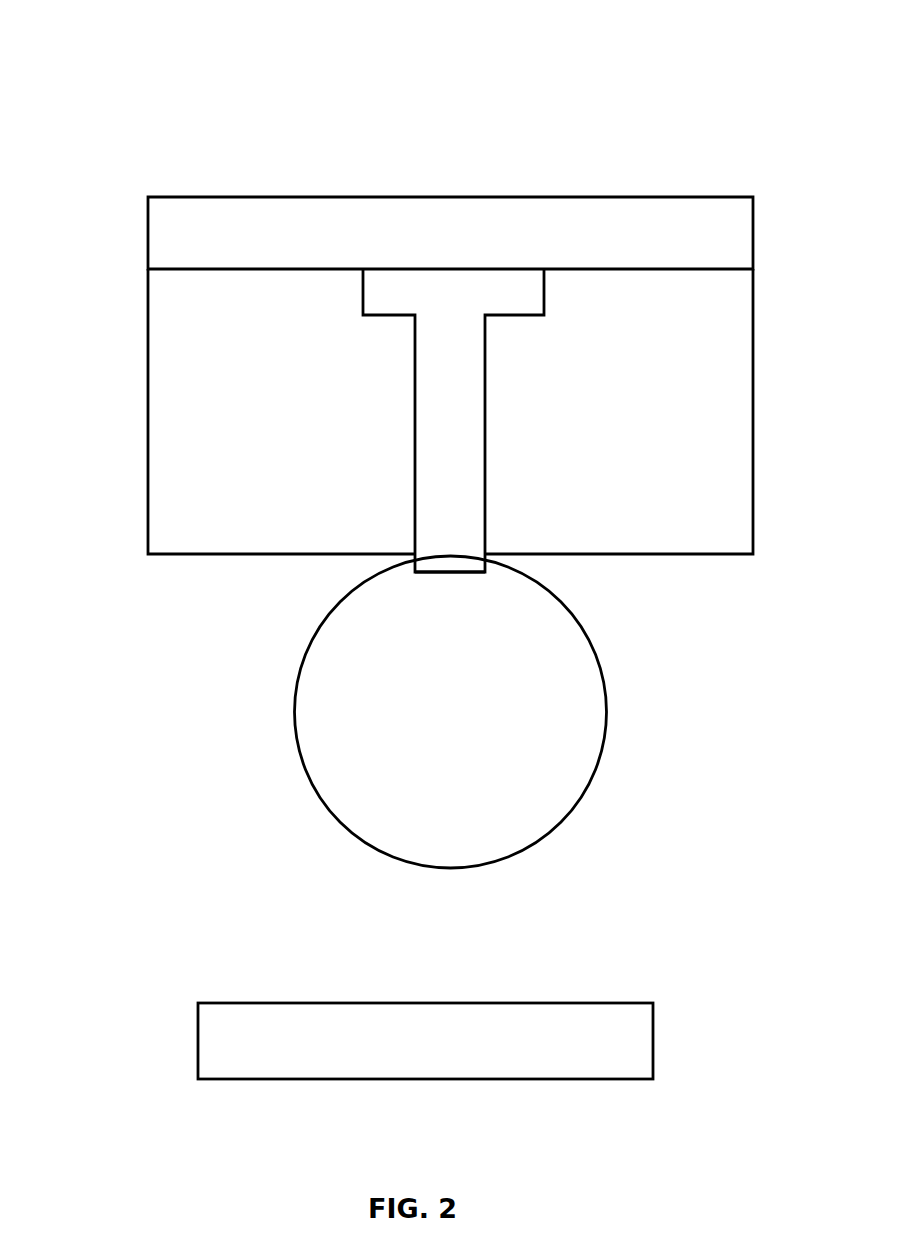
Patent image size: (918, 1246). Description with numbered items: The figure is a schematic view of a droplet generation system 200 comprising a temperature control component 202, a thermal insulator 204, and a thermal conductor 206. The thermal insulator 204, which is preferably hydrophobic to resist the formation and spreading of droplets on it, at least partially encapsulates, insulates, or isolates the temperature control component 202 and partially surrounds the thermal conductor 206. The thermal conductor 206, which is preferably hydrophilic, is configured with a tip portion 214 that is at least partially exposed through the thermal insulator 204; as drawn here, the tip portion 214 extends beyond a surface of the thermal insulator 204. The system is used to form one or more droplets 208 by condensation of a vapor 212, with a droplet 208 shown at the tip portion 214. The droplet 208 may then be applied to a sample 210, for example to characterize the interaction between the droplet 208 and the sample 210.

The droplet generation system 200 is at (450, 115).
The temperature control component 202 is at (195, 212).
The thermal insulator 204 is at (200, 495).
The thermal conductor 206 is at (383, 293).
The droplet 208 is at (317, 748).
The sample 210 is at (228, 1042).
The vapor 212 is at (232, 655).
The tip portion 214 is at (442, 559).